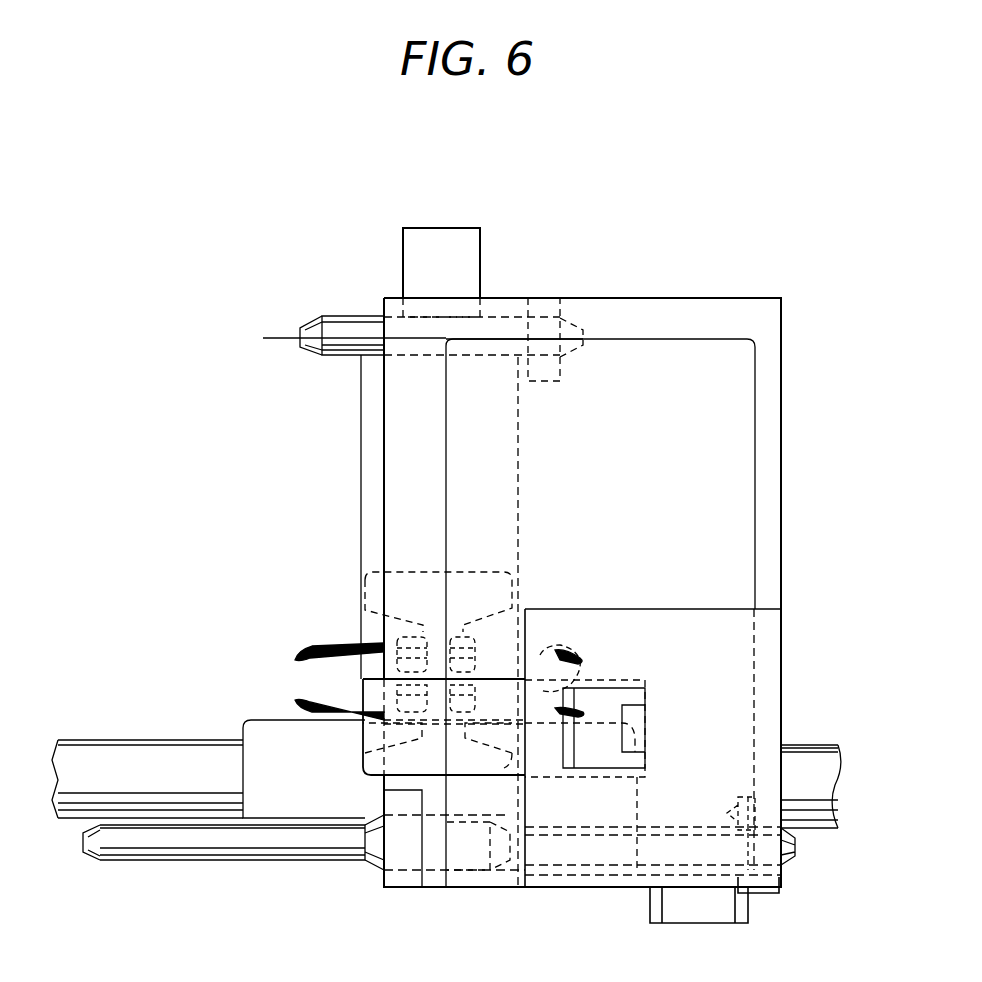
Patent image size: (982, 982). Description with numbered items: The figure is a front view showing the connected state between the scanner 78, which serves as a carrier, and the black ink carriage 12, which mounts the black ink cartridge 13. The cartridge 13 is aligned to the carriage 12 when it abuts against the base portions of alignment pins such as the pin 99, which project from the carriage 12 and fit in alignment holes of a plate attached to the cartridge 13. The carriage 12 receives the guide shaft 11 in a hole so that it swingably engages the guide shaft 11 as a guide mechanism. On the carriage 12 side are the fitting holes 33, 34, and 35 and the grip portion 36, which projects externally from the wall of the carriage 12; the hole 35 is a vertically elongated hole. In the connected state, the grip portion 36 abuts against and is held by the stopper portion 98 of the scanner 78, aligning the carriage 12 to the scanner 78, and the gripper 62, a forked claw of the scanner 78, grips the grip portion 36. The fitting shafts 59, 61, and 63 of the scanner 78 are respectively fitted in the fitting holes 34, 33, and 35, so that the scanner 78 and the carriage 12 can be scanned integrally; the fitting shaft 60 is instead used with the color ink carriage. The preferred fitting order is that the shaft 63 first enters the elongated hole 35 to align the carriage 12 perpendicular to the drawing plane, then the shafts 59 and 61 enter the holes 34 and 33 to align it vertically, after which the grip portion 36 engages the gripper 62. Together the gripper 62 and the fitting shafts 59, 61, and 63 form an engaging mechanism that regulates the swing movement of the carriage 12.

The guide shaft 11 is at (815, 755).
The black ink carriage 12 is at (770, 325).
The black ink cartridge 13 is at (625, 352).
The fitting hole 33 is at (378, 880).
The fitting hole 34 is at (760, 857).
The fitting hole 35 is at (545, 305).
The grip portion 36 is at (580, 668).
The fitting shaft 59 is at (697, 857).
The fitting shaft 60 is at (208, 850).
The fitting shaft 61 is at (410, 850).
The gripper 62 is at (318, 645).
The fitting shaft 63 is at (345, 330).
The scanner 78 is at (365, 390).
The stopper portion 98 is at (556, 648).
The pin 99 is at (745, 797).